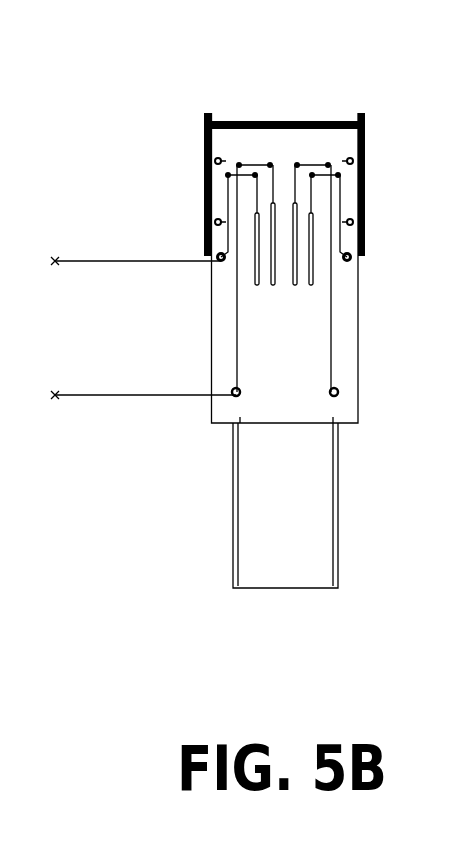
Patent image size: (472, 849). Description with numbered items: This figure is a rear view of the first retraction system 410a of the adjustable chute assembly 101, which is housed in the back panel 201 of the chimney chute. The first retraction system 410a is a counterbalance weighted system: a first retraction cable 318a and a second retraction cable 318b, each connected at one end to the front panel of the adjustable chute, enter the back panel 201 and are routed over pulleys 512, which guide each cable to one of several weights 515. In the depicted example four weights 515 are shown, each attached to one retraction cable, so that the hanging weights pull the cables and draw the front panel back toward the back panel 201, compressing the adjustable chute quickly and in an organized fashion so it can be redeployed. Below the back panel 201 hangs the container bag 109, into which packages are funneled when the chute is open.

The adjustable chute assembly 101 is at (276, 58).
The first retraction system 410a is at (303, 135).
The back panel 201 is at (212, 424).
The container bag 109 is at (237, 473).
The weights 515 is at (328, 277).
The first retraction cable 318a is at (118, 263).
The second retraction cable 318b is at (137, 398).
The pulleys 512 is at (238, 391).